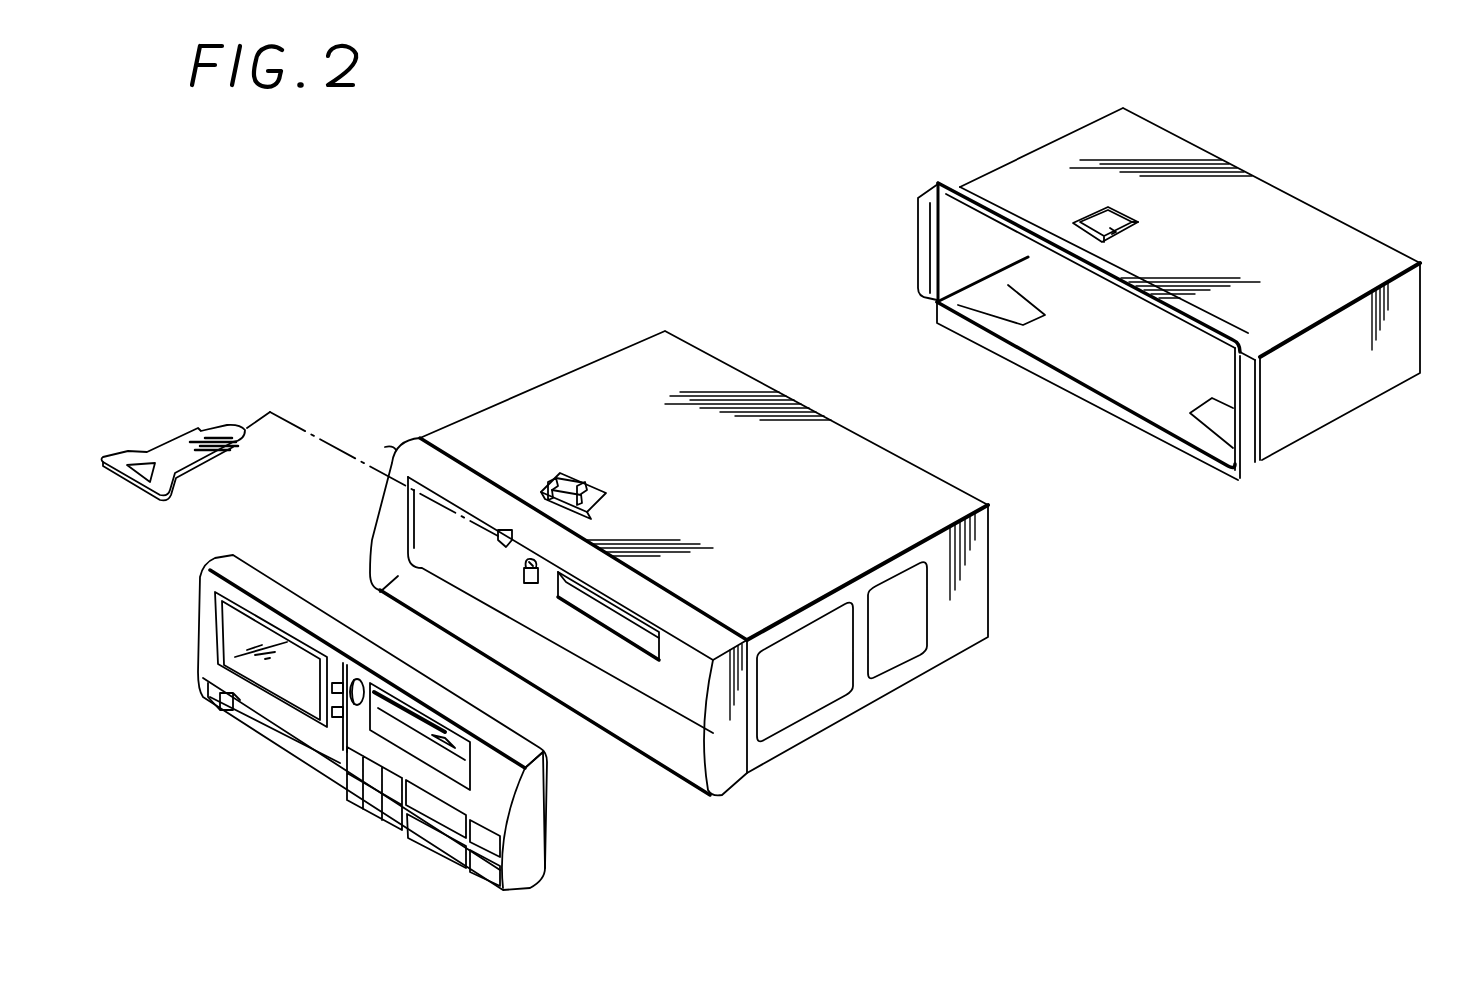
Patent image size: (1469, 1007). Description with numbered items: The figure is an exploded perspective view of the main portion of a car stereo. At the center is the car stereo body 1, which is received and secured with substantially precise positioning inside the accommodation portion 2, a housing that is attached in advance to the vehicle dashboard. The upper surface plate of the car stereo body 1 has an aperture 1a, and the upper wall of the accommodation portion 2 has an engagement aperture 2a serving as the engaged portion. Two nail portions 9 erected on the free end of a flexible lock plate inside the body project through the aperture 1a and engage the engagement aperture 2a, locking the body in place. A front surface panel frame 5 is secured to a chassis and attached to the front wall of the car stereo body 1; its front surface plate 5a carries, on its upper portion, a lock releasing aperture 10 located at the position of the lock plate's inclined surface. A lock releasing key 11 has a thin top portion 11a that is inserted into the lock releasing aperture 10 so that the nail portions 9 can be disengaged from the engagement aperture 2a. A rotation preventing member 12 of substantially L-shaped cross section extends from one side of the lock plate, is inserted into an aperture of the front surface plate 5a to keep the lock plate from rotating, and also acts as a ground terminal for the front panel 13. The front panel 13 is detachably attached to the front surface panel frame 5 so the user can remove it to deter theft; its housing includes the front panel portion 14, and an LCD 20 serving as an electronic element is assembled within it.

The car stereo body 1 is at (607, 372).
The aperture 1a is at (603, 477).
The accommodation portion 2 is at (1040, 173).
The engagement aperture 2a is at (1138, 227).
The front surface panel frame 5 is at (392, 530).
The front surface plate 5a is at (570, 627).
The nail portions 9 is at (586, 480).
The lock releasing aperture 10 is at (512, 543).
The lock releasing key 11 is at (168, 450).
The top portion 11a is at (227, 430).
The rotation preventing member 12 is at (527, 583).
The front panel 13 is at (190, 632).
The front panel portion 14 is at (532, 842).
The LCD 20 is at (305, 690).